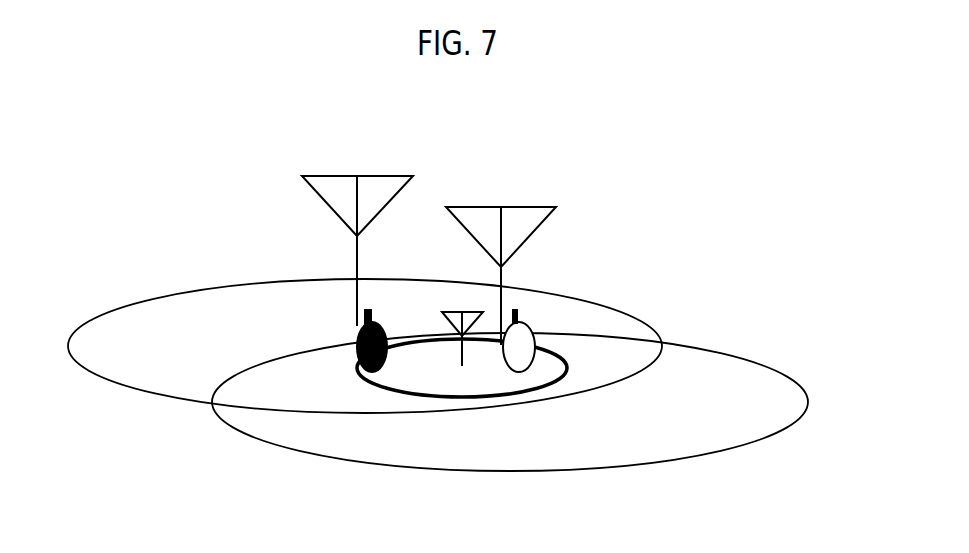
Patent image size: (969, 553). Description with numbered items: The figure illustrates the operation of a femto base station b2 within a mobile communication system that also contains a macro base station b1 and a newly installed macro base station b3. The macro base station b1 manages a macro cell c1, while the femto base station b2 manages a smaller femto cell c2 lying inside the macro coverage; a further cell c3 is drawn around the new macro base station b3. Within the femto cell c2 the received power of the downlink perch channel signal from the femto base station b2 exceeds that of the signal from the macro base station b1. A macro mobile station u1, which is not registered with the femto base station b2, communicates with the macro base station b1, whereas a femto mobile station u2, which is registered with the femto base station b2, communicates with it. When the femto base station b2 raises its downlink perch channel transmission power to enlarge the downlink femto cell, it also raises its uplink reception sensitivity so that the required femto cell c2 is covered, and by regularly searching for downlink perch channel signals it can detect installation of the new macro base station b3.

The macro base station b1 is at (353, 143).
The femto base station b2 is at (463, 311).
The new macro base station b3 is at (523, 174).
The macro cell c1 is at (219, 258).
The femto cell c2 is at (556, 345).
The macro cell c3 is at (750, 364).
The macro mobile station u1 is at (361, 370).
The femto mobile station u2 is at (523, 353).